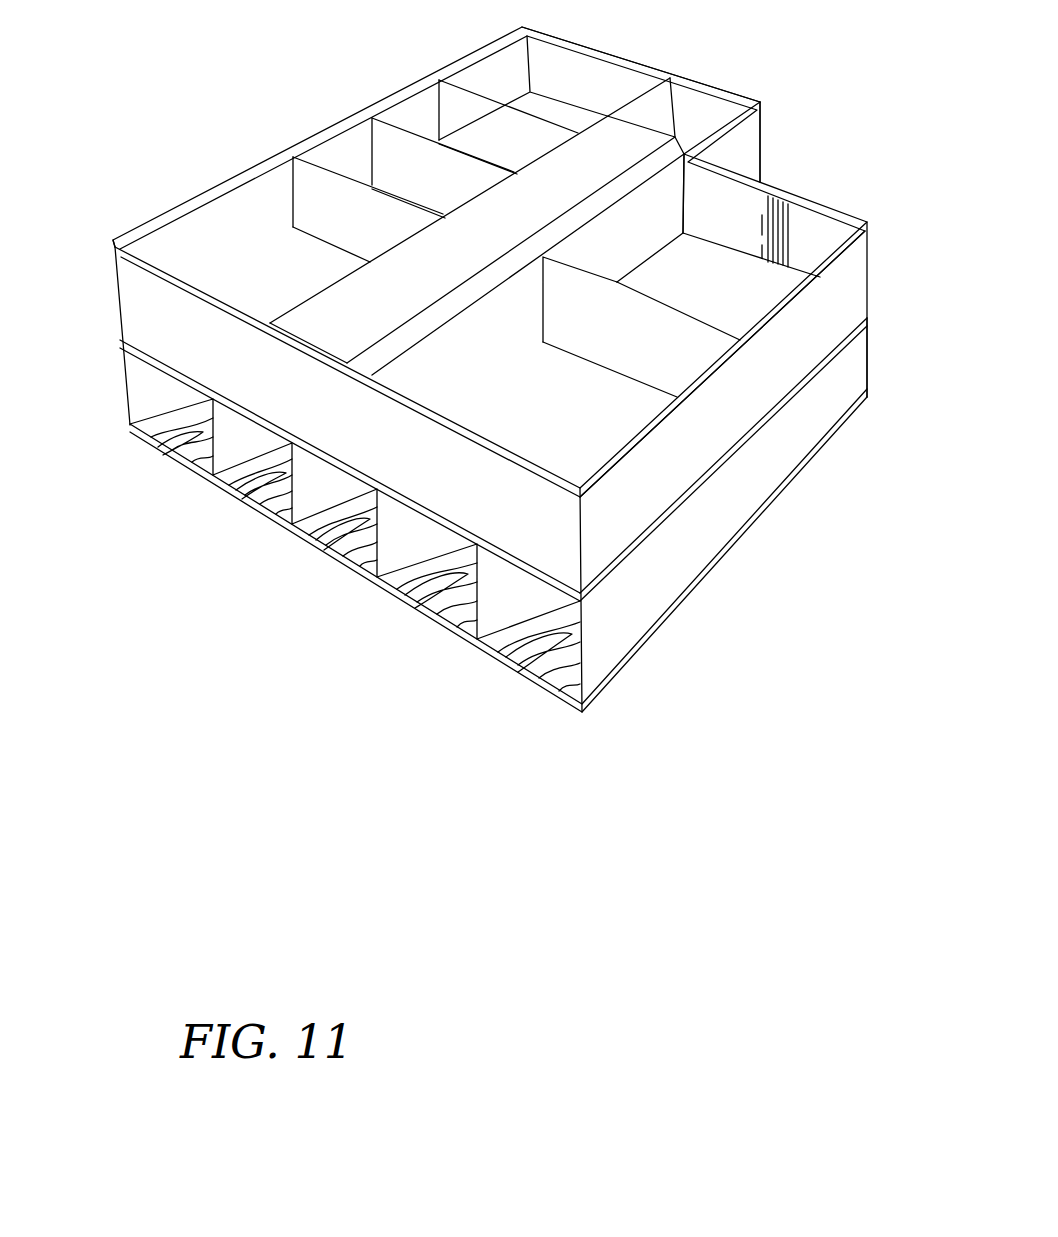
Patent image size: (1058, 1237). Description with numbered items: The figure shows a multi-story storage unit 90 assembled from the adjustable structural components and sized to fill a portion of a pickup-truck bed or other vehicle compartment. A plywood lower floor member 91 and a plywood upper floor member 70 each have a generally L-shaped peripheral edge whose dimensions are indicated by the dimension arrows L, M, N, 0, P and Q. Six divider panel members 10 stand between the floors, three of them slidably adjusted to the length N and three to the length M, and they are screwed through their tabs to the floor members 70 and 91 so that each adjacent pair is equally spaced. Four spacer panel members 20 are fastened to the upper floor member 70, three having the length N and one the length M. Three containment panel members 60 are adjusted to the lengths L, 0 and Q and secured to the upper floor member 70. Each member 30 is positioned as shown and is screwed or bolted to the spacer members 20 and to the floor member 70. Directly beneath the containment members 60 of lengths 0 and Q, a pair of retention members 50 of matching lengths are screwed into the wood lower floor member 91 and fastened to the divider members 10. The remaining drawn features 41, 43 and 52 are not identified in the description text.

The dimension arrow O 0 is at (712, 77).
The divider panel member 10 is at (80, 371).
The spacer panel member 20 is at (214, 242).
The member 30 is at (516, 253).
The lower rail 41 is at (150, 356).
The support block 43 is at (490, 547).
The retention member 50 is at (877, 325).
The end wall edge 52 is at (874, 349).
The containment panel member 60 is at (562, 59).
The upper floor member 70 is at (695, 487).
The storage unit 90 is at (423, 35).
The lower floor member 91 is at (768, 512).
The dimension arrow L is at (340, 378).
The dimension arrow M is at (767, 328).
The dimension arrow N is at (115, 235).
The dimension arrow P is at (745, 128).
The dimension arrow Q is at (683, 220).